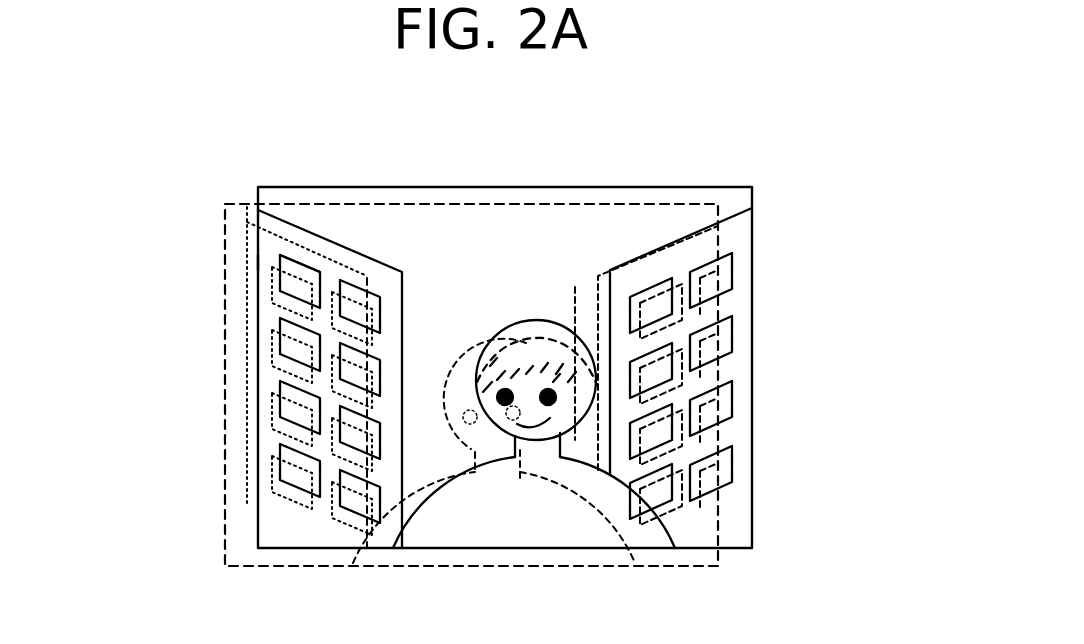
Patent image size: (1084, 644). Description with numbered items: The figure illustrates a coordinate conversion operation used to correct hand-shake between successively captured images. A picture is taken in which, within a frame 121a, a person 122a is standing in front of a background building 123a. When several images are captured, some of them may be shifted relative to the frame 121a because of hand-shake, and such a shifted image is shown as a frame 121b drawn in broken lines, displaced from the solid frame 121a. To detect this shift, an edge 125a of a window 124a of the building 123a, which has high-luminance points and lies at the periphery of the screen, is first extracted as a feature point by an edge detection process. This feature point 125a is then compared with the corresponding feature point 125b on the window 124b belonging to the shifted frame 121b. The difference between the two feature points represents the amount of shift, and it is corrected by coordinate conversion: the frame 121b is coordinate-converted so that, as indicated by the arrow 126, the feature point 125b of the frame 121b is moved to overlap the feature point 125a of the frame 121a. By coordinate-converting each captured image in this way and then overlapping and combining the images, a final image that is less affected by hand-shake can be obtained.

The frame 121a is at (753, 188).
The frame 121b is at (664, 568).
The person 122a is at (525, 320).
The building 123a is at (316, 327).
The window 124a is at (290, 260).
The feature point 125a is at (283, 255).
The window 124b is at (234, 377).
The feature point 125b is at (268, 259).
The arrow 126 is at (258, 262).